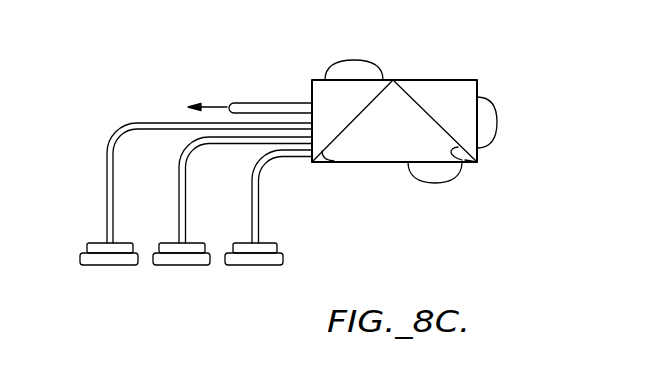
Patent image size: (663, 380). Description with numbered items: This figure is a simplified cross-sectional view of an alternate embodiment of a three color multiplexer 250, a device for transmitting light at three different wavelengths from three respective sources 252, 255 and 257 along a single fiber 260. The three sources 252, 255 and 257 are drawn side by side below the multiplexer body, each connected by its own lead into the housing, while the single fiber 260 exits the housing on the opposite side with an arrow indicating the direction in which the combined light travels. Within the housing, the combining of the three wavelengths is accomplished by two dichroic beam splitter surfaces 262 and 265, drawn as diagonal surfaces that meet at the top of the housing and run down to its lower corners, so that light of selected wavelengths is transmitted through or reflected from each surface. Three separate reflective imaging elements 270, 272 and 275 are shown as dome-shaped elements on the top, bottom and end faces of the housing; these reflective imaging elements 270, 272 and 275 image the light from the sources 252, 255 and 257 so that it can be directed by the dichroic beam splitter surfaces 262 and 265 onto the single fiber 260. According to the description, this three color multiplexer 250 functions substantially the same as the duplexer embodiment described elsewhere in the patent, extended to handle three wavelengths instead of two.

The three color multiplexer 250 is at (304, 160).
The source 252 is at (110, 268).
The source 255 is at (184, 268).
The source 257 is at (254, 268).
The single fiber 260 is at (258, 103).
The dichroic beam splitter surface 262 is at (382, 191).
The dichroic beam splitter surface 265 is at (552, 172).
The reflective imaging element 270 is at (365, 68).
The reflective imaging element 272 is at (437, 174).
The reflective imaging element 275 is at (497, 120).